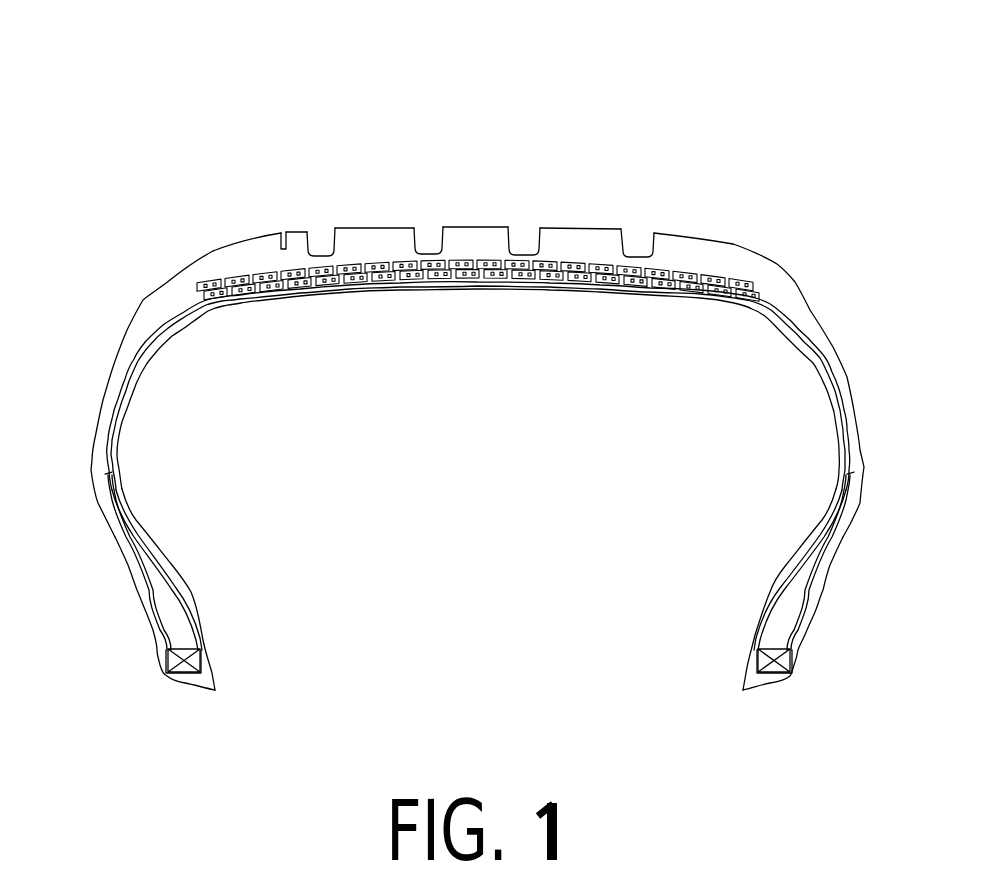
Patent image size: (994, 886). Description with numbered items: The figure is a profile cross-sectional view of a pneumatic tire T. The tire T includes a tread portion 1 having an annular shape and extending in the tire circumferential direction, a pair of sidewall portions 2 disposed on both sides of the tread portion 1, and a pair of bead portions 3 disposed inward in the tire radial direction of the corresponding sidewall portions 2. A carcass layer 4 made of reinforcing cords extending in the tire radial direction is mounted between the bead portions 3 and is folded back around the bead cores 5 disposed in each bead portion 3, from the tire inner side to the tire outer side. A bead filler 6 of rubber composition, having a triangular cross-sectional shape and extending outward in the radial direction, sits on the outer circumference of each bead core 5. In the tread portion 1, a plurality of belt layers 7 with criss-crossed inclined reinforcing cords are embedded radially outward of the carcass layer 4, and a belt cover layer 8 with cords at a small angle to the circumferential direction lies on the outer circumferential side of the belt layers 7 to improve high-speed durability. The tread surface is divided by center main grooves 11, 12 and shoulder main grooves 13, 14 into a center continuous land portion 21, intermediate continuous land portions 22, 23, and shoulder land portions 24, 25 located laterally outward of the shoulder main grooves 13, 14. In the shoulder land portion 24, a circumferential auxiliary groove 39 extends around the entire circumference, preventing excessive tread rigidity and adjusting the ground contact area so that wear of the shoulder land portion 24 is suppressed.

The pneumatic tire T is at (531, 72).
The tread portion 1 is at (606, 221).
The sidewall portion 2 is at (100, 384).
The bead portion 3 is at (147, 651).
The carcass layer 4 is at (787, 328).
The bead core 5 is at (193, 660).
The bead filler 6 is at (178, 621).
The belt layer 7 is at (632, 275).
The belt cover layer 8 is at (262, 268).
The center main groove 11 is at (420, 230).
The center main groove 12 is at (524, 229).
The shoulder main groove 13 is at (308, 232).
The shoulder main groove 14 is at (633, 230).
The center continuous land portion 21 is at (494, 229).
The intermediate continuous land portion 22 is at (373, 233).
The intermediate continuous land portion 23 is at (577, 235).
The shoulder land portion 24 is at (243, 243).
The shoulder land portion 25 is at (737, 252).
The circumferential auxiliary groove 39 is at (282, 232).